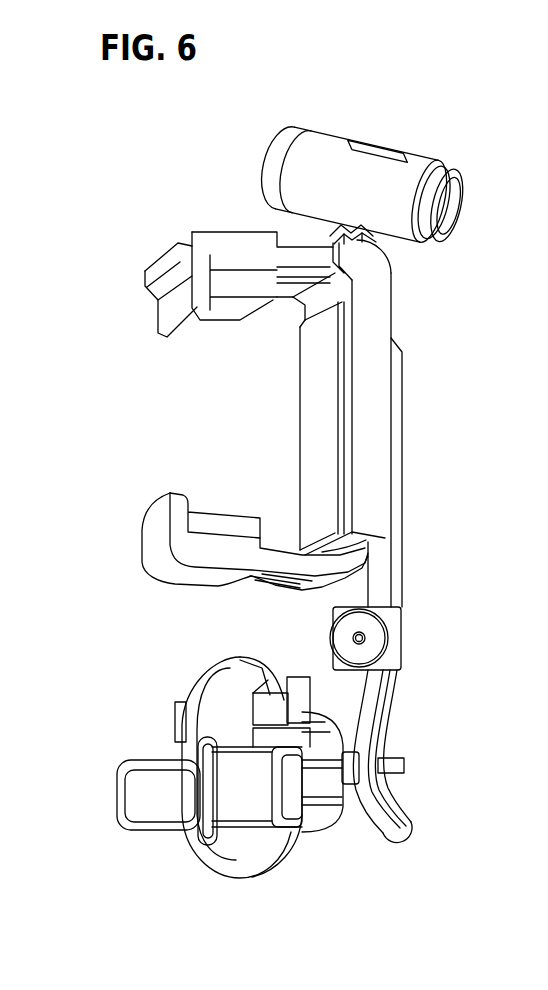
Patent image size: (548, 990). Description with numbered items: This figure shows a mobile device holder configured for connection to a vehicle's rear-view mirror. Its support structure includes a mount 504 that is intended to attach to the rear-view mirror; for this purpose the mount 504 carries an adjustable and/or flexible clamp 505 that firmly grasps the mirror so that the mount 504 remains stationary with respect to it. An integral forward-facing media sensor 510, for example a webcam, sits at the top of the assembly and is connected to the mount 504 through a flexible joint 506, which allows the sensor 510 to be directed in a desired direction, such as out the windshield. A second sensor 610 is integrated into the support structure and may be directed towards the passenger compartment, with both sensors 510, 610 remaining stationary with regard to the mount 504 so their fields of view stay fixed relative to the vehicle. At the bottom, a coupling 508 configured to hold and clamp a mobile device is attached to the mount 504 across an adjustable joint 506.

The mount 504 is at (323, 449).
The clamp 505 is at (197, 282).
The flexible joint 506 is at (342, 228).
The coupling 508 is at (290, 813).
The forward-facing media sensor 510 is at (287, 172).
The second sensor 610 is at (358, 626).